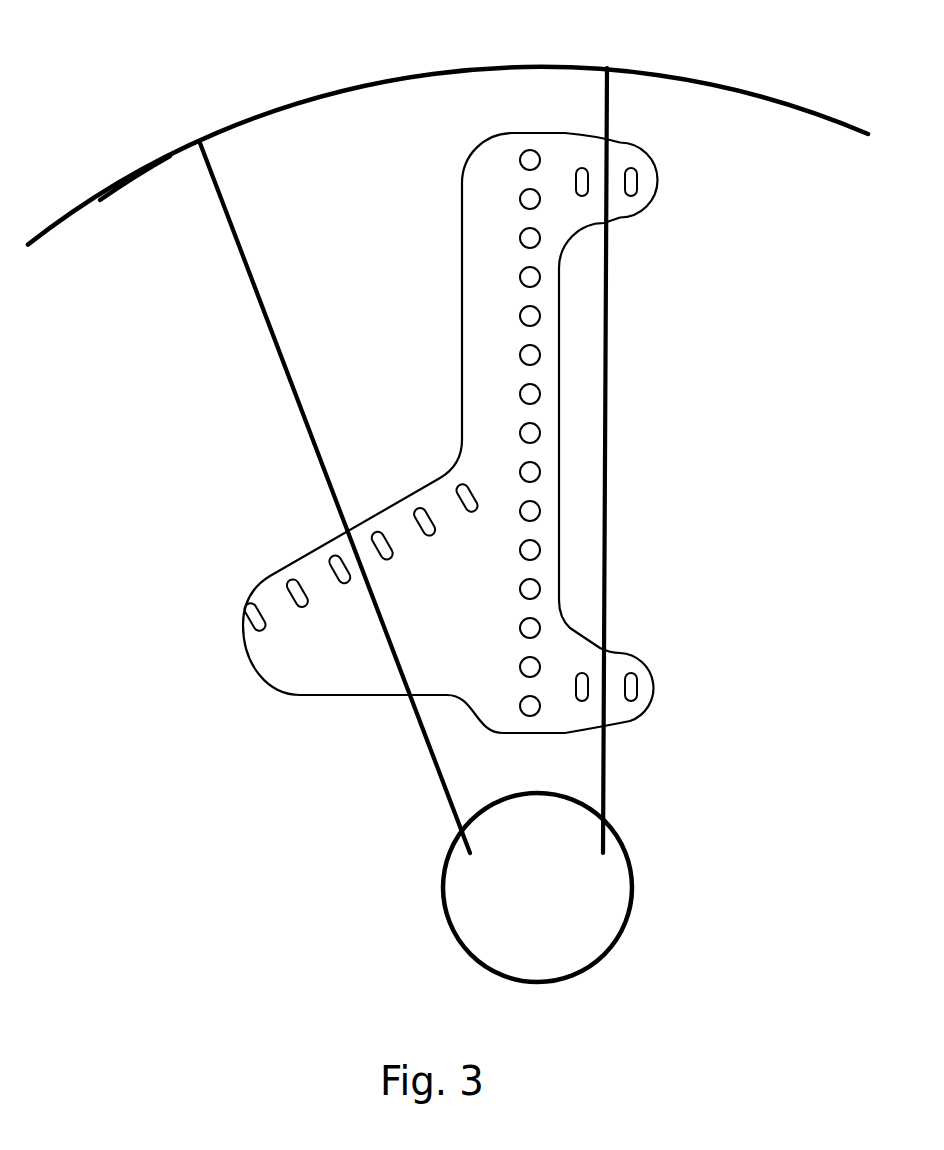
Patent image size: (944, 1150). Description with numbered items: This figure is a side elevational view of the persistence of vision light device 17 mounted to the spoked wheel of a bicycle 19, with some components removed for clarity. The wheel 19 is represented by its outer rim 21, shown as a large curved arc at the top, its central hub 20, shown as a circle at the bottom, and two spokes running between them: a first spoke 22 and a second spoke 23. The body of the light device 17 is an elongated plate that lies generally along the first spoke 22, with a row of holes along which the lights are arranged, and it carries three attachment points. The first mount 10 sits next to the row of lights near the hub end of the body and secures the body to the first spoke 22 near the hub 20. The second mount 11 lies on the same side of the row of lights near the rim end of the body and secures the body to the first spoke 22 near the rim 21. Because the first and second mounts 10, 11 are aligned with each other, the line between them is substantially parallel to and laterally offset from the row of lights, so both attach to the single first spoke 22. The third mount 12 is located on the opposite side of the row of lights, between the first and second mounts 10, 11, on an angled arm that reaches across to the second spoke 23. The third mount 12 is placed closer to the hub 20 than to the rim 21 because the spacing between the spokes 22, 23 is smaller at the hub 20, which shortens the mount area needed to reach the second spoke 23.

The first mount 10 is at (618, 668).
The second mount 11 is at (621, 203).
The third mount 12 is at (345, 550).
The light device 17 is at (345, 667).
The spoked wheel of a bicycle 19 is at (288, 86).
The hub 20 is at (632, 895).
The rim 21 is at (132, 180).
The first spoke 22 is at (607, 408).
The second spoke 23 is at (273, 350).